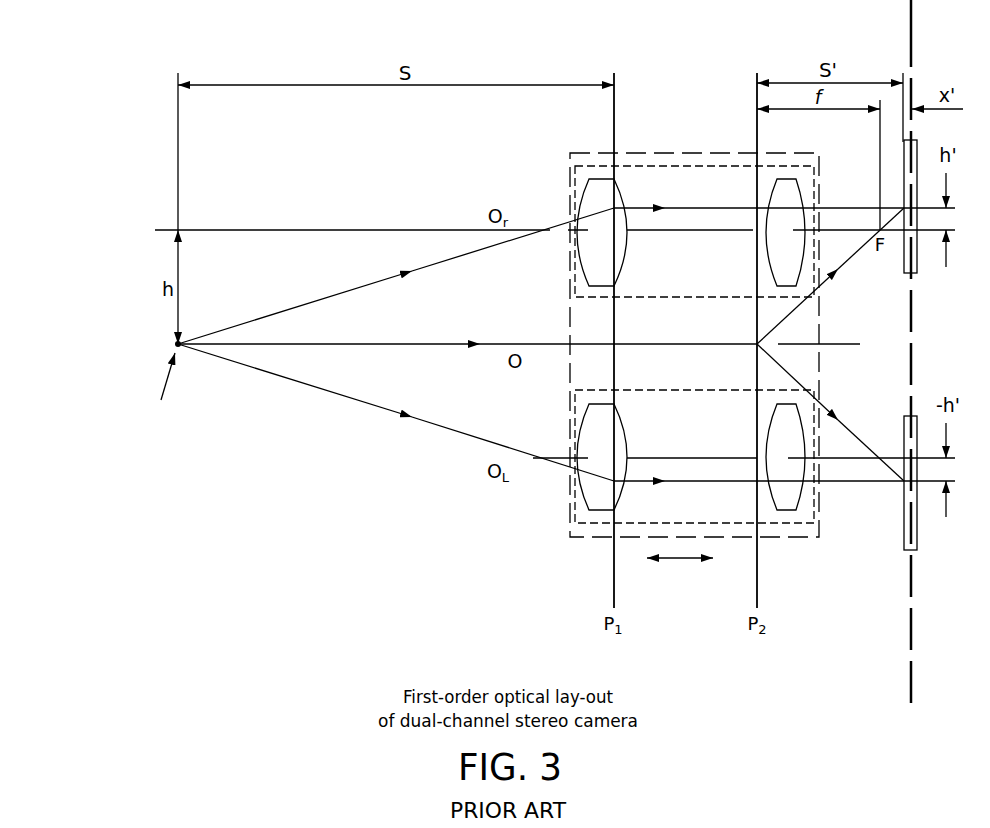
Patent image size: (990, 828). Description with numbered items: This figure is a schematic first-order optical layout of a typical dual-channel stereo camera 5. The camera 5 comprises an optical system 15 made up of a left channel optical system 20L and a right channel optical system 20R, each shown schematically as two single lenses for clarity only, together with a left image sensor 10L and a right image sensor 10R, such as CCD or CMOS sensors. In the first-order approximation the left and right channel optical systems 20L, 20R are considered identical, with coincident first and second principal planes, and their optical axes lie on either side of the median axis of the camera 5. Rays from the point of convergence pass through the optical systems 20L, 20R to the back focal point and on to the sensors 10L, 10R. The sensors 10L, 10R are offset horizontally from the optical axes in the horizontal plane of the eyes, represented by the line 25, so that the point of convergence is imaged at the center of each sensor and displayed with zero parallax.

The dual-channel stereo camera 5 is at (257, 553).
The optical system 15 is at (567, 534).
The right channel optical system 20R is at (666, 160).
The left channel optical system 20L is at (600, 530).
The right image sensor 10R is at (909, 258).
The left image sensor 10L is at (910, 537).
The line representing the horizontal plane 25 is at (913, 681).